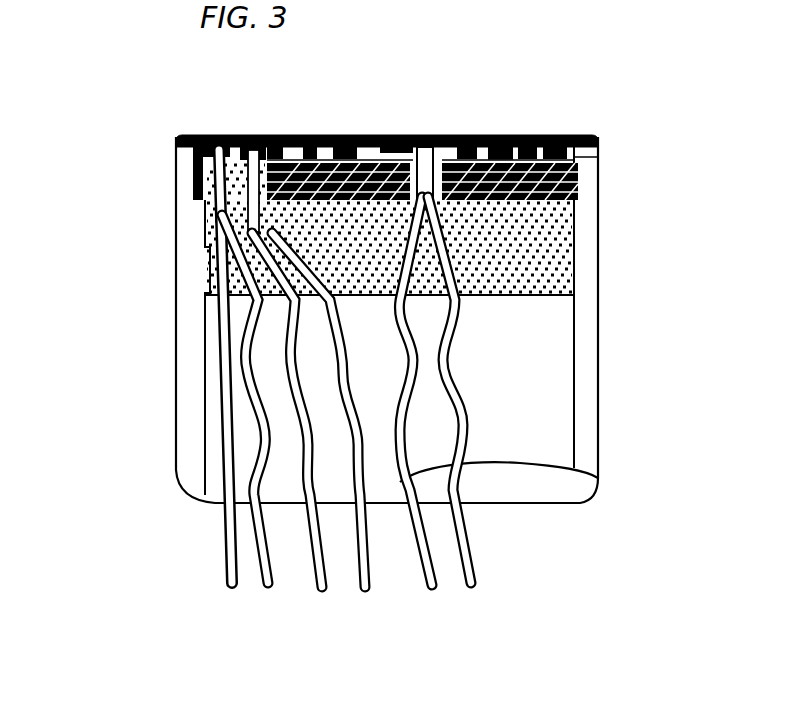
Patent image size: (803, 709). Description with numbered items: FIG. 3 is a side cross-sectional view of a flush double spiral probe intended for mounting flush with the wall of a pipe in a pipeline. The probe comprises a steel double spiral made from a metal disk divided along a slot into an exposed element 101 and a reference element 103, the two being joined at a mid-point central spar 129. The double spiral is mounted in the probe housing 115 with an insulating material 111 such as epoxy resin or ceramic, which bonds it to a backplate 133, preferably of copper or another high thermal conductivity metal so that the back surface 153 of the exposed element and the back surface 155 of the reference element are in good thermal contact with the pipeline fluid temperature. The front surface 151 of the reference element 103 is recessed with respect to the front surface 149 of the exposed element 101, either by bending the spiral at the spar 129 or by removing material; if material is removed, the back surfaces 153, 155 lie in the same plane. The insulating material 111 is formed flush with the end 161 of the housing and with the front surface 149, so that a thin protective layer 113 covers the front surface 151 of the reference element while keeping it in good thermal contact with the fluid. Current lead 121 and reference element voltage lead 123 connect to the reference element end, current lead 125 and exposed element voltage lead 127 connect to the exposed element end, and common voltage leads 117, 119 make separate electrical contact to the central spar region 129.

The exposed element 101 is at (257, 135).
The reference element 103 is at (555, 135).
The potting compound 111 is at (574, 272).
The protective layer 113 is at (343, 136).
The probe housing 115 is at (186, 262).
The common voltage lead 117 is at (435, 588).
The common voltage lead 119 is at (478, 587).
The current lead 121 is at (228, 590).
The reference element voltage lead 123 is at (273, 588).
The current lead 125 is at (322, 595).
The exposed element voltage lead 127 is at (366, 590).
The central spar 129 is at (398, 127).
The backplate 133 is at (574, 191).
The front surface of exposed element 149 is at (470, 135).
The front surface of reference element 151 is at (503, 135).
The back surface of exposed element 153 is at (489, 135).
The back surface of reference element 155 is at (598, 157).
The end of probe housing 161 is at (182, 133).